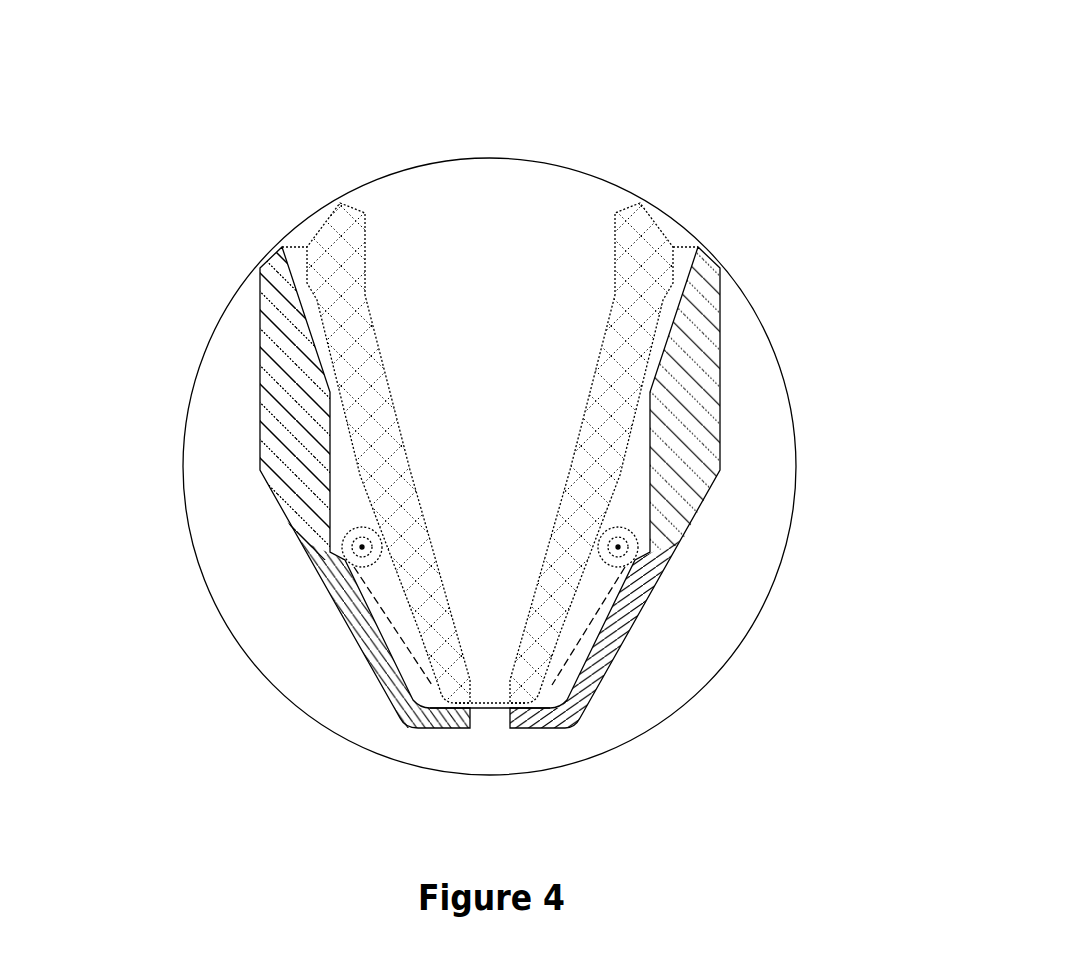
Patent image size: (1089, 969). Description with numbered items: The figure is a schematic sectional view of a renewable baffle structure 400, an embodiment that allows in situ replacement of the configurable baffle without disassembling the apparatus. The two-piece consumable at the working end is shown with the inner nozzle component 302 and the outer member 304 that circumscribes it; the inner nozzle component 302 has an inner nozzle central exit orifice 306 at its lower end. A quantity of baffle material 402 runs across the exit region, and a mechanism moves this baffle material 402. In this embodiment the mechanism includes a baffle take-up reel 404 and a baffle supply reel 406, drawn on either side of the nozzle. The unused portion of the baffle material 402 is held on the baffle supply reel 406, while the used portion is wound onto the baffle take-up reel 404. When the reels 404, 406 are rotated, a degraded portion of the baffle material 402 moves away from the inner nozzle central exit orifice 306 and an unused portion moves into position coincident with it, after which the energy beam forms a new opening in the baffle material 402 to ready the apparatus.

The renewable baffle structure 400 is at (883, 133).
The inner nozzle component 302 is at (352, 248).
The outer member 304 is at (277, 273).
The inner nozzle central exit orifice 306 is at (488, 672).
The baffle material 402 is at (497, 710).
The baffle take-up reel 404 is at (347, 535).
The baffle supply reel 406 is at (632, 543).